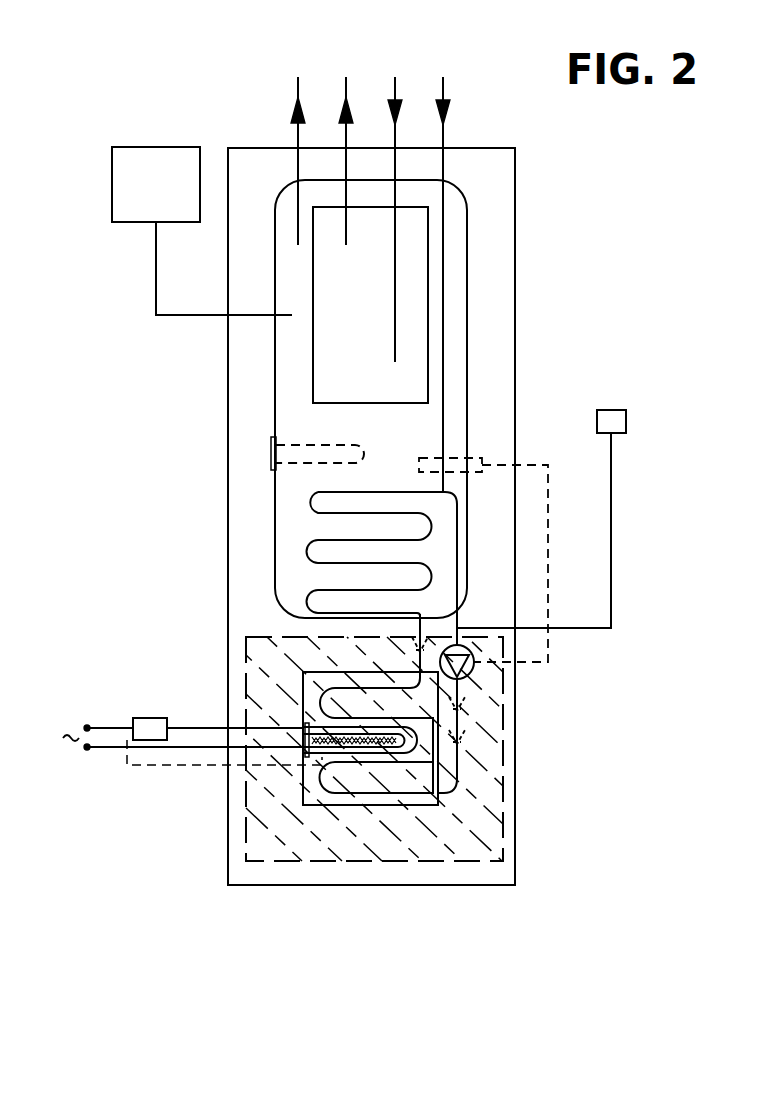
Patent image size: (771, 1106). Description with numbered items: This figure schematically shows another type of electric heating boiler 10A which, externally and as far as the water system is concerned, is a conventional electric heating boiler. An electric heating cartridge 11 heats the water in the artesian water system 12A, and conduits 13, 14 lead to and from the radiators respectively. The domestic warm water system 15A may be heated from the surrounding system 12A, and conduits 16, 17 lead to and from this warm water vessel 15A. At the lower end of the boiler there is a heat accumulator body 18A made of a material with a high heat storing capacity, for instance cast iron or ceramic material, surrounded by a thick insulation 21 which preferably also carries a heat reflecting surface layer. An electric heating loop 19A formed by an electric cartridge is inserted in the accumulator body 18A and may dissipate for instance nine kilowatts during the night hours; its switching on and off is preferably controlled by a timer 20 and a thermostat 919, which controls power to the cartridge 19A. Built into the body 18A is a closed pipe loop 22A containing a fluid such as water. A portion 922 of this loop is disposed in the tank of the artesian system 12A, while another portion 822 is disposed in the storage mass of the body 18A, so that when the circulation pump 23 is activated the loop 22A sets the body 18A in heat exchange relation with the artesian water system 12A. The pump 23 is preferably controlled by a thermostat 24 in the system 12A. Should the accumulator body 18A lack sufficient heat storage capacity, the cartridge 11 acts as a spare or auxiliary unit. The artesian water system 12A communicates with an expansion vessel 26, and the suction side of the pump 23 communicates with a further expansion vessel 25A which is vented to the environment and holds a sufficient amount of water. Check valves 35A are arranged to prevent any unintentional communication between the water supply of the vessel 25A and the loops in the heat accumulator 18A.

The heating boiler 10A is at (515, 326).
The artesian water system 12A is at (275, 365).
The domestic warm water system 15A is at (428, 285).
The conduit to the radiators 13 is at (298, 135).
The conduit from the warm water vessel 17 is at (346, 135).
The conduit to the warm water vessel 16 is at (395, 133).
The conduit from the radiators 14 is at (443, 133).
The expansion vessel 26 is at (135, 178).
The electric heating cartridge 11 is at (320, 445).
The thermostat 24 is at (477, 452).
The expansion vessel 25A is at (617, 420).
The portion of the loop 922 is at (308, 500).
The closed pipe loop 22A is at (340, 677).
The circulation pump 23 is at (473, 676).
The check valves 35A is at (468, 700).
The thermal insulation 21 is at (470, 835).
The heat accumulator body 18A is at (313, 793).
The portion of the loop 822 is at (360, 805).
The electric heating loop 19A is at (310, 720).
The timer 20 is at (145, 718).
The thermostat 919 is at (162, 766).